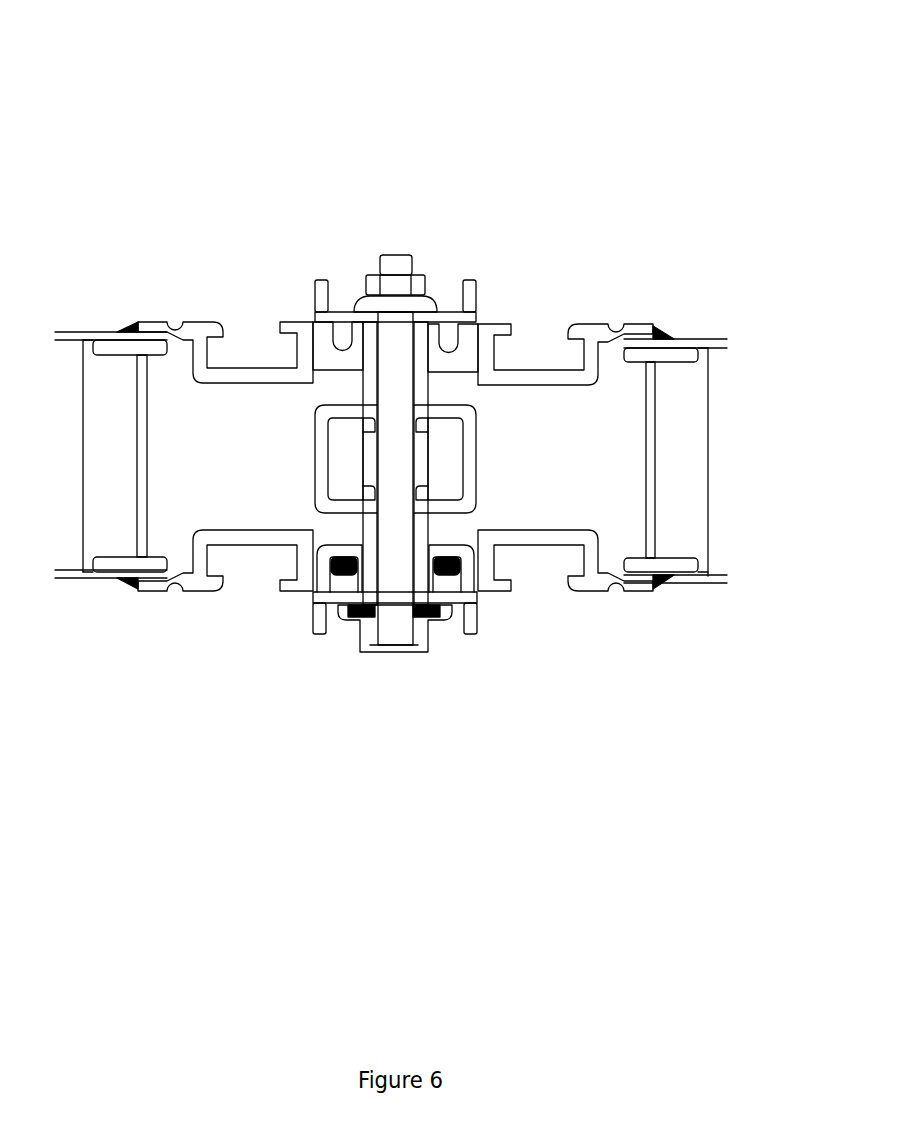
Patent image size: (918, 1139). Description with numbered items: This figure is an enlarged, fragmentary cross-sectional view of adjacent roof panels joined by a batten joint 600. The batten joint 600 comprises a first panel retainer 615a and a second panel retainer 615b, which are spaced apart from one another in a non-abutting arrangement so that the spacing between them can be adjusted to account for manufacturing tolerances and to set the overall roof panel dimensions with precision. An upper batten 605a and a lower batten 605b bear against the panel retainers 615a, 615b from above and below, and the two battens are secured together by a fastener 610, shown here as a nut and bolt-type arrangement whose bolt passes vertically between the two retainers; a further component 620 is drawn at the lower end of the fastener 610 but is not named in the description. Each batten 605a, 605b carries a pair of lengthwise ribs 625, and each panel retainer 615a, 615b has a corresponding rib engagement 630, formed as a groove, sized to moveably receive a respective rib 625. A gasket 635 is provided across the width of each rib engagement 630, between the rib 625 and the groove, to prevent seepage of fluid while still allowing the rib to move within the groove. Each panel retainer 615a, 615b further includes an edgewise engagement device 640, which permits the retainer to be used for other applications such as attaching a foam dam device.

The batten joint 600 is at (695, 71).
The upper batten 605a is at (473, 283).
The lower batten 605b is at (478, 635).
The fastener 610 is at (398, 652).
The first panel retainer 615a is at (203, 322).
The second panel retainer 615b is at (632, 327).
The nut 620 is at (358, 615).
The lengthwise rib 625 is at (342, 328).
The rib engagement 630 is at (330, 348).
The gasket 635 is at (323, 590).
The edgewise engagement device 640 is at (343, 463).